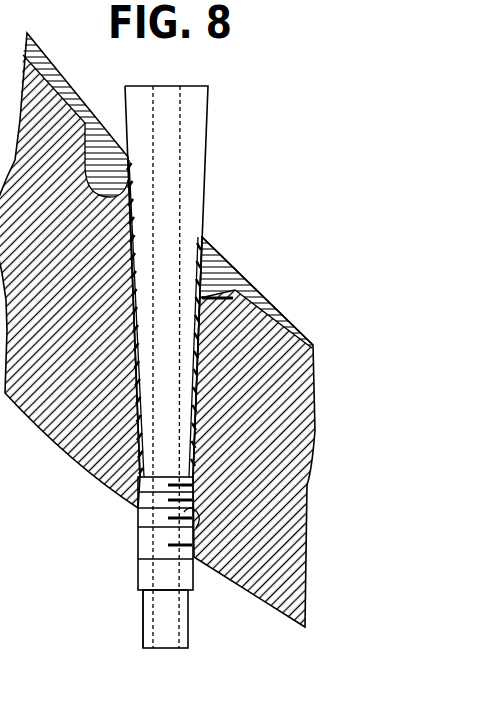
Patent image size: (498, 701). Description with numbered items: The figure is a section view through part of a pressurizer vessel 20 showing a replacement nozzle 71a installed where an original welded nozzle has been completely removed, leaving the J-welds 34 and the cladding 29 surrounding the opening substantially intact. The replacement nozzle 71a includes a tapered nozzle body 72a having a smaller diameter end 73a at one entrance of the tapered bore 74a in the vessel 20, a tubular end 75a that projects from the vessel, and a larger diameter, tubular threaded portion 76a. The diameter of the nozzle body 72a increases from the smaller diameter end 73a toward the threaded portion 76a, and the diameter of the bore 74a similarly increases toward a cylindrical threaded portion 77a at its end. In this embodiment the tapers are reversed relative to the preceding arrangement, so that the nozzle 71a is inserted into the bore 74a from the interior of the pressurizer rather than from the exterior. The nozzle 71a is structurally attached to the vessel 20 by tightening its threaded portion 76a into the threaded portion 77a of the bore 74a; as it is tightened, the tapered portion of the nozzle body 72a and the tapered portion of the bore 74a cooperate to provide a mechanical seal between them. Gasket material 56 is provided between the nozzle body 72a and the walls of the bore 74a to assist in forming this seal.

The vessel 20 is at (292, 423).
The cladding 29 is at (258, 292).
The J-welds 34 is at (218, 264).
The gasket material 56 is at (197, 333).
The tapered nozzle body 72a is at (185, 377).
The smaller diameter end 73a is at (203, 123).
The bore 74a is at (133, 310).
The tubular end 75a is at (182, 635).
The threaded portion 76a is at (158, 523).
The threaded portion of the bore 77a is at (186, 518).
The replacement nozzle 71a is at (138, 618).